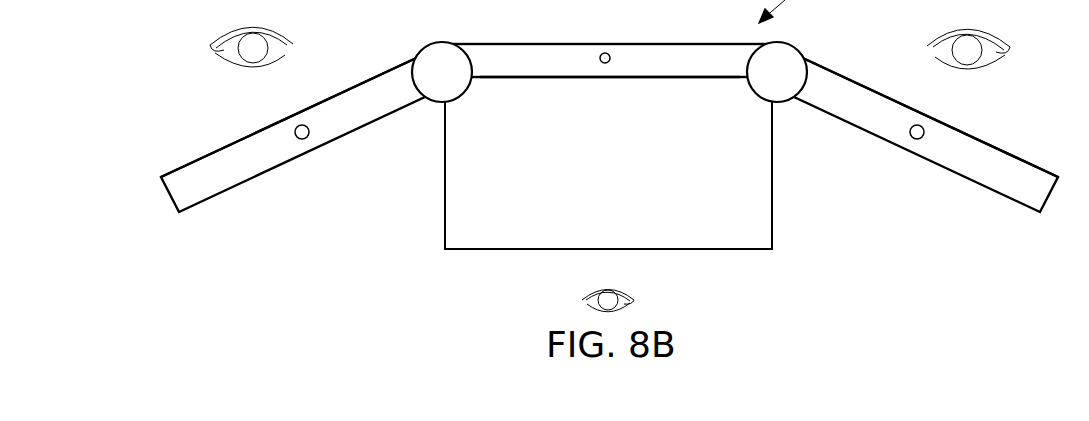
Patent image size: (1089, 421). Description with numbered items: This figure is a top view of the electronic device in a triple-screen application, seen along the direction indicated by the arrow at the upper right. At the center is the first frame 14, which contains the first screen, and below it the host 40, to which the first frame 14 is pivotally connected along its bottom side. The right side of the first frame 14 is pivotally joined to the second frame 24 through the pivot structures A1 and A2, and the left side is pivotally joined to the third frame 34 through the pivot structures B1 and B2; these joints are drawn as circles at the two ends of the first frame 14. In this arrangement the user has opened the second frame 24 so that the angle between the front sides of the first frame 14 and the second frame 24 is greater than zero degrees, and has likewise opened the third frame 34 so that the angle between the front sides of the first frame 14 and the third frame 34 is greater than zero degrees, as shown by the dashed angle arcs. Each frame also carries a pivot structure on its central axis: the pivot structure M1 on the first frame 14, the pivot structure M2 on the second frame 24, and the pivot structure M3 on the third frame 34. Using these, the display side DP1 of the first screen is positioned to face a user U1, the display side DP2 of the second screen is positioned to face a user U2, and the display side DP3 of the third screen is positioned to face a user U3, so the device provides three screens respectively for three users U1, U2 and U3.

The first frame 14 is at (571, 68).
The second frame 24 is at (1028, 186).
The third frame 34 is at (209, 186).
The host 40 is at (469, 246).
The display side of the first screen DP1 is at (527, 79).
The display side of the second screen DP2 is at (1006, 152).
The display side of the third screen DP3 is at (212, 151).
The pivot structure M1 is at (611, 58).
The pivot structure M2 is at (912, 139).
The pivot structure M3 is at (305, 139).
The user U1 is at (609, 103).
The user U2 is at (934, 116).
The user U3 is at (287, 113).